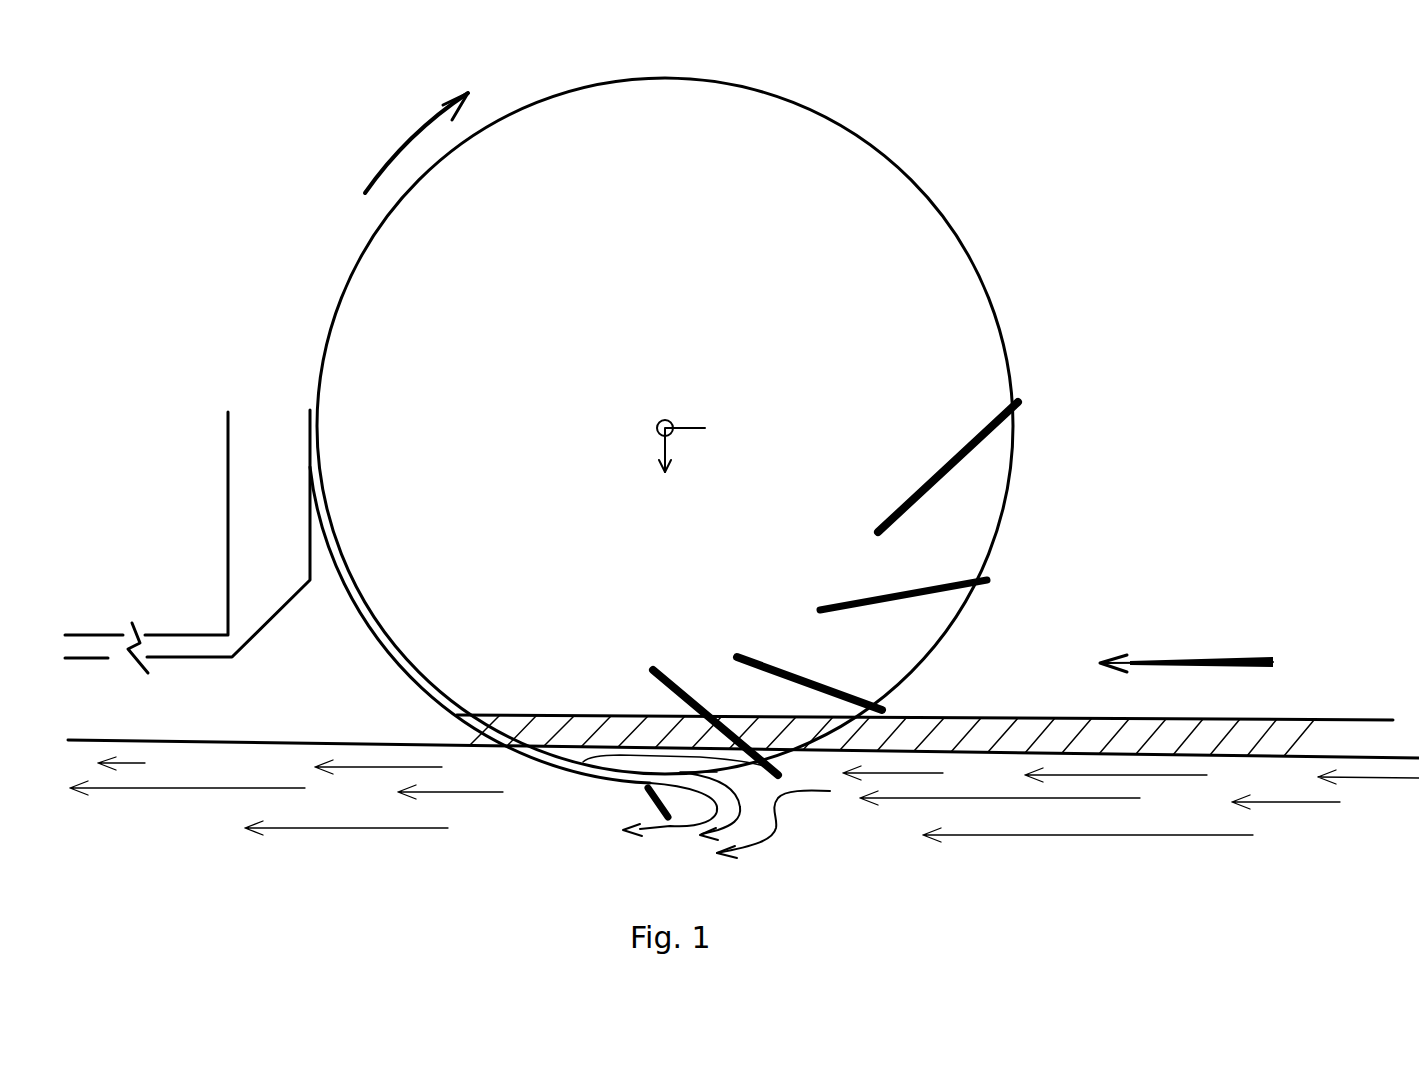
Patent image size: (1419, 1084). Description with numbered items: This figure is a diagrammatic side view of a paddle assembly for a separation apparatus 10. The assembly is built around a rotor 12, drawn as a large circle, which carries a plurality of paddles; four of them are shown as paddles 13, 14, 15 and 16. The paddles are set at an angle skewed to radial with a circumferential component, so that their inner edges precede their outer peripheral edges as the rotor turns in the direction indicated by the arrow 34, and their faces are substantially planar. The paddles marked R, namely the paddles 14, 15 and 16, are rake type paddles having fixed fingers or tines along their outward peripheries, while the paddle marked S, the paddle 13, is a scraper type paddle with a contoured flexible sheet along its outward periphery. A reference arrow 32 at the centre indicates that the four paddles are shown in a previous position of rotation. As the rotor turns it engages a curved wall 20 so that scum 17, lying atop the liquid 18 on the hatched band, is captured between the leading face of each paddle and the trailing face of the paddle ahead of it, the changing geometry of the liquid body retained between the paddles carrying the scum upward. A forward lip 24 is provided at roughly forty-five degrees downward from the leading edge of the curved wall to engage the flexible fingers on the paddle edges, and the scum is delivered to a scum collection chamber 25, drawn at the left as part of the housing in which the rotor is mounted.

The separation apparatus 10 is at (689, 426).
The rotor 12 is at (990, 298).
The scraper type paddle 13 is at (935, 470).
The rake type paddle 14 is at (850, 600).
The rake type paddle 15 is at (797, 675).
The rake type paddle 16 is at (655, 688).
The scum 17 is at (960, 732).
The liquid 18 is at (744, 807).
The curved wall 20 is at (365, 627).
The forward lip 24 is at (648, 810).
The scum collection chamber 25 is at (276, 432).
The reference arrow 32 is at (660, 476).
The direction of rotation arrow 34 is at (397, 152).